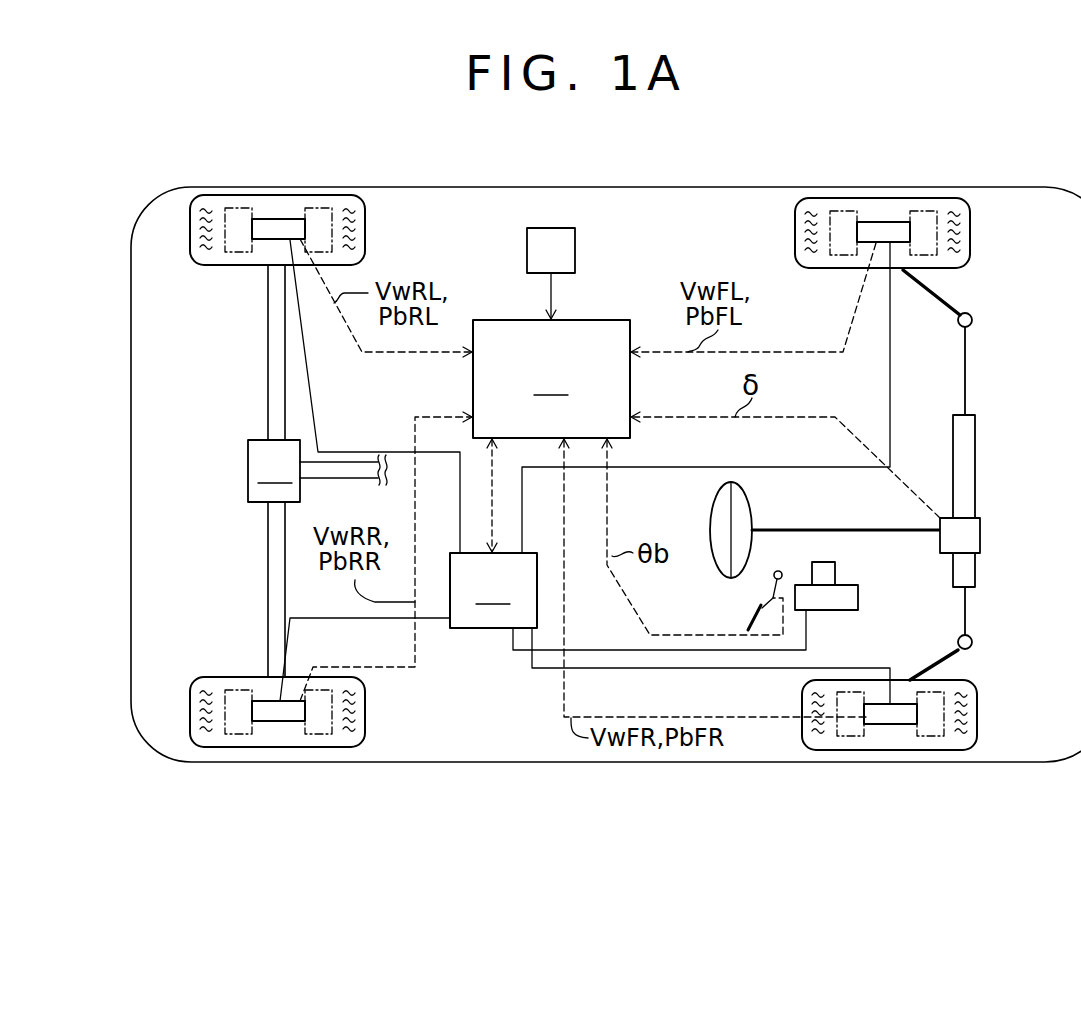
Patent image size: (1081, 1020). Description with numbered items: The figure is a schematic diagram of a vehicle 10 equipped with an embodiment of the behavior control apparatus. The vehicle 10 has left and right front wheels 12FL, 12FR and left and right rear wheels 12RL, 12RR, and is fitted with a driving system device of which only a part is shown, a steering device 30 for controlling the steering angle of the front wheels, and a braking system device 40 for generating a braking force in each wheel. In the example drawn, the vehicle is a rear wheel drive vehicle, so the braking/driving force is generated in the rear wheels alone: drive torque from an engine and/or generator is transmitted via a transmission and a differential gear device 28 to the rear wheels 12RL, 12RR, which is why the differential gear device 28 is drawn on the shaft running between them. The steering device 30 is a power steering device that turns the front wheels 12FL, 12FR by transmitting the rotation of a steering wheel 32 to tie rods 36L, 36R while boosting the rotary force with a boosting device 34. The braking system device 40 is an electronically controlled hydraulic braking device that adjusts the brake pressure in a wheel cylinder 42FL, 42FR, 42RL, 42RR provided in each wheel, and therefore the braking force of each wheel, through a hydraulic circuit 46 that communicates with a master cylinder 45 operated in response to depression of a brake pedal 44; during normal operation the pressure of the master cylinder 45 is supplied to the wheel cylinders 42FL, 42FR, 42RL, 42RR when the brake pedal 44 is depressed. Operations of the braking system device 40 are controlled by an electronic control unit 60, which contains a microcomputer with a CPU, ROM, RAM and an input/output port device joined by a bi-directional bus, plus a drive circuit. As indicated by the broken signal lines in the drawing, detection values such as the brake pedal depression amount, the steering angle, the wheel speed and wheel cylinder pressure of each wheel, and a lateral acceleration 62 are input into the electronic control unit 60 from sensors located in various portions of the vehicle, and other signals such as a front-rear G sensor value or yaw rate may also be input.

The vehicle 10 is at (657, 169).
The left rear wheel 12RL is at (190, 215).
The left front wheel 12FL is at (940, 198).
The right rear wheel 12RR is at (190, 724).
The right front wheel 12FR is at (978, 720).
The wheel cylinder 42RL is at (282, 219).
The wheel cylinder 42FL is at (878, 222).
The wheel cylinder 42RR is at (278, 721).
The wheel cylinder 42FR is at (893, 724).
The differential gear device 28 is at (317, 471).
The electronic control unit 60 is at (551, 379).
The lateral acceleration 62 is at (578, 242).
The hydraulic circuit 46 is at (486, 636).
The braking system device 40 is at (585, 472).
The steering device 30 is at (856, 475).
The steering wheel 32 is at (712, 505).
The boosting device 34 is at (980, 535).
The tie rod 36L is at (950, 302).
The tie rod 36R is at (972, 665).
The brake pedal 44 is at (752, 620).
The master cylinder 45 is at (822, 612).